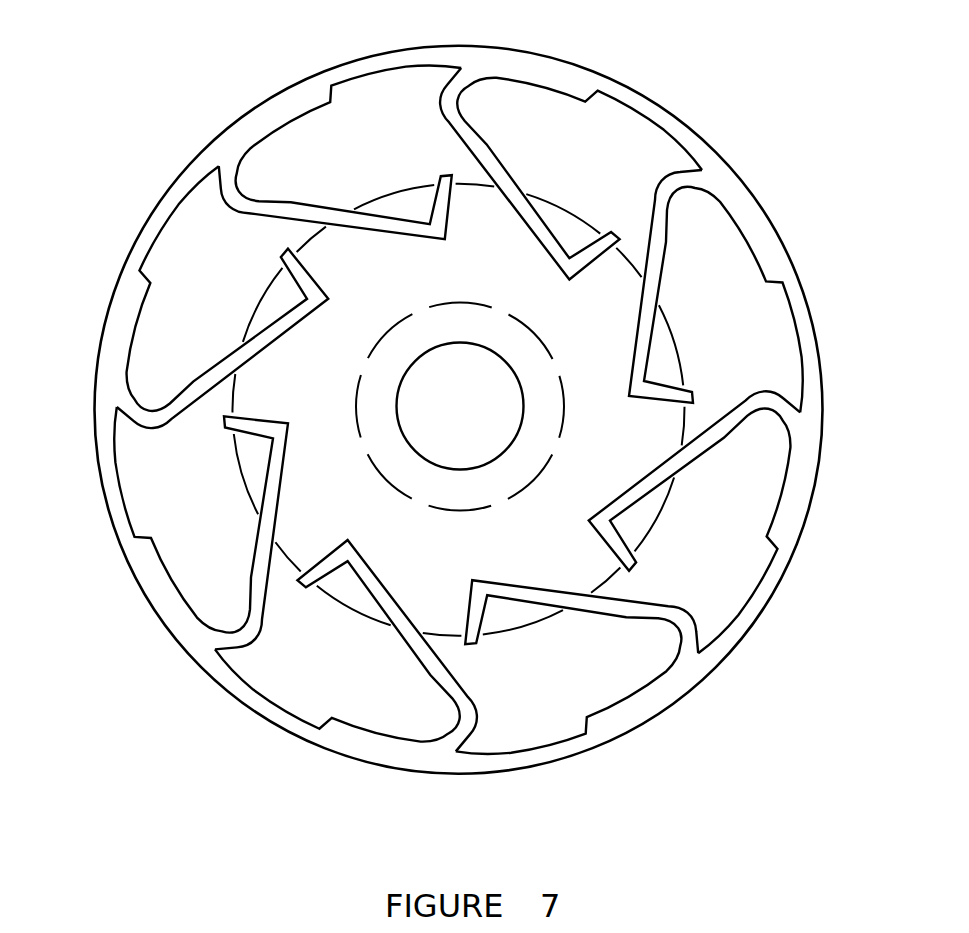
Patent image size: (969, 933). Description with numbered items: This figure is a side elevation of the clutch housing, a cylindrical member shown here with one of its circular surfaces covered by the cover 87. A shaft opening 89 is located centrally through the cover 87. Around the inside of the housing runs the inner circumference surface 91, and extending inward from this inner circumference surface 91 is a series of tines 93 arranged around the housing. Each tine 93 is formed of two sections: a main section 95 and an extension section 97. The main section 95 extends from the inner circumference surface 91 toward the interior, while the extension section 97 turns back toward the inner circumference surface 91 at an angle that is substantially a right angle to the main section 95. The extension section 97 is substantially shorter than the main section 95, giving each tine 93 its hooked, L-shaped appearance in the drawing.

The cover 87 is at (615, 462).
The shaft opening 89 is at (431, 382).
The inner circumference surface 91 is at (667, 137).
The tine 93 is at (313, 202).
The main section 95 is at (723, 407).
The extension section 97 is at (299, 571).